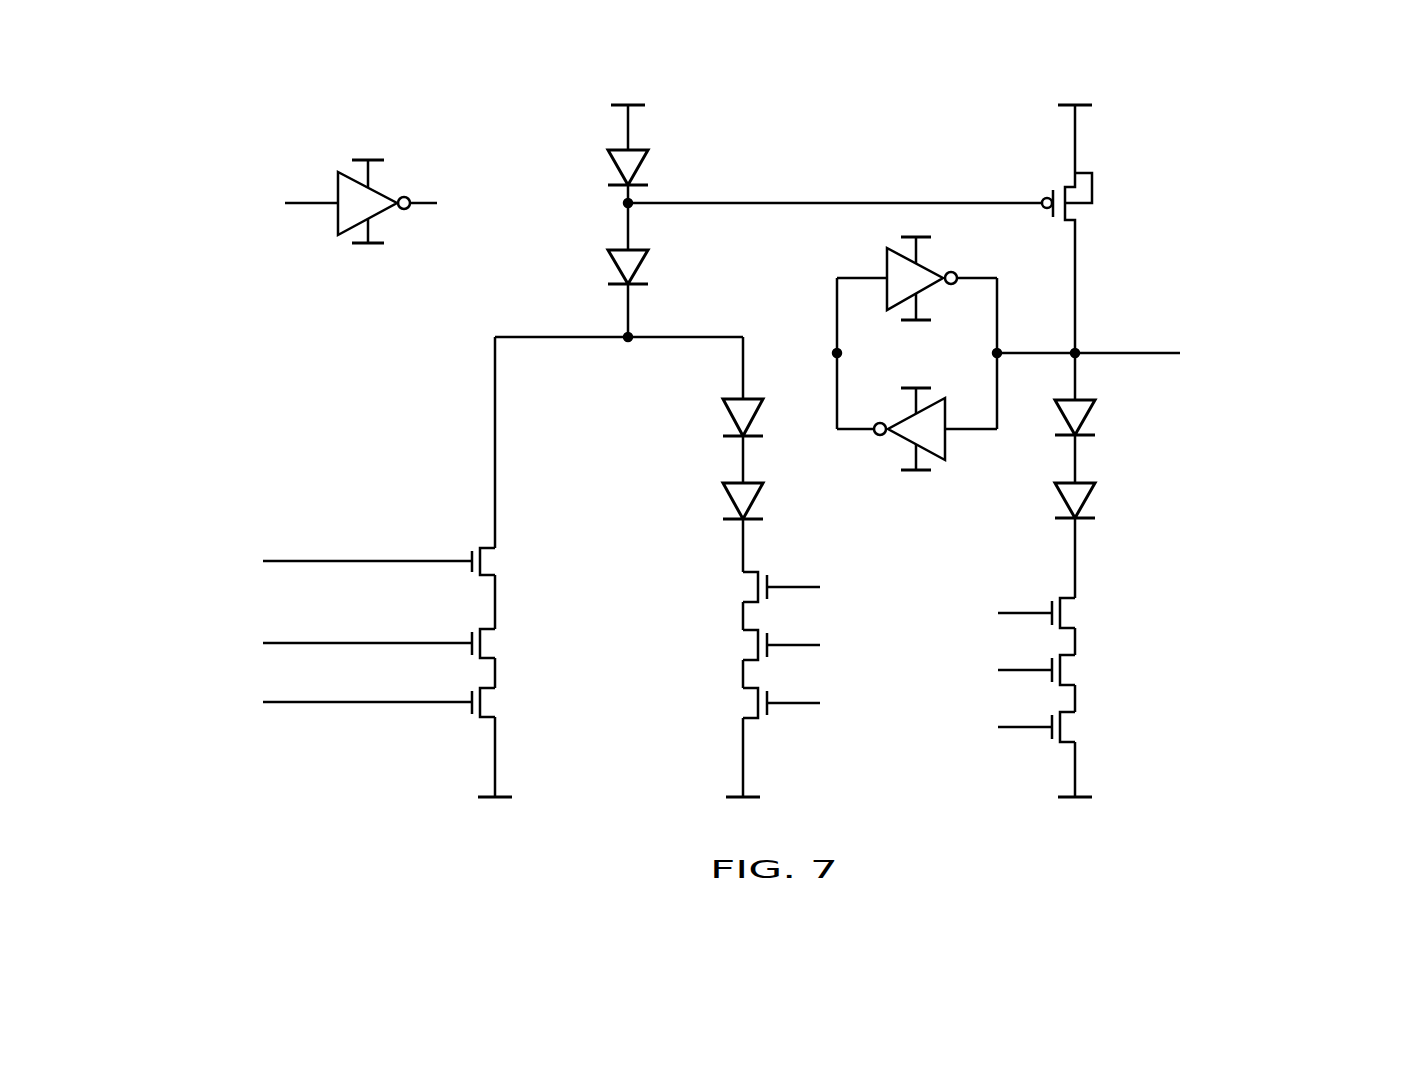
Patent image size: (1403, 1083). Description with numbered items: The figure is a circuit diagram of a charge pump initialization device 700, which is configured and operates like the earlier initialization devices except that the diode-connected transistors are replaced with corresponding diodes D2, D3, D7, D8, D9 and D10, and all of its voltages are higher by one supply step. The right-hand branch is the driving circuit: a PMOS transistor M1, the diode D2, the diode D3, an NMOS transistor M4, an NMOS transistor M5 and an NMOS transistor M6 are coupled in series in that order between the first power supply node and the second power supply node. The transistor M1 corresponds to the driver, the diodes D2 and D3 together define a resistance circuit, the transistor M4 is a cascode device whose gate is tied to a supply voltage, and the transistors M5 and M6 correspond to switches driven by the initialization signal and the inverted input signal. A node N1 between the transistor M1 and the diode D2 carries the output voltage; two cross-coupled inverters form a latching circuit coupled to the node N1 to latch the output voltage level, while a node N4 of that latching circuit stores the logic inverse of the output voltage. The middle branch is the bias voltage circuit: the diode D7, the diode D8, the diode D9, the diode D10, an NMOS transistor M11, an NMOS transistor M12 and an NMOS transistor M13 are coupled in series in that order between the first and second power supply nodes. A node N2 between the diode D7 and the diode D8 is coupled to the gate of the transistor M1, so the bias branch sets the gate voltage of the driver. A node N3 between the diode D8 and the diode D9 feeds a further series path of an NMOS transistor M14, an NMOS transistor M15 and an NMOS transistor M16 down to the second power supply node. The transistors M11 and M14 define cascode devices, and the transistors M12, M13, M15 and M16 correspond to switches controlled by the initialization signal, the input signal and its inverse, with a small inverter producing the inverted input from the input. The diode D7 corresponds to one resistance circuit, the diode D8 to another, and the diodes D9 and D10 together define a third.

The charge pump initialization device 700 is at (1249, 115).
The diode D7 is at (648, 179).
The diode D8 is at (648, 278).
The diode D9 is at (725, 428).
The diode D10 is at (725, 511).
The diode D2 is at (1095, 429).
The diode D3 is at (1095, 511).
The PMOS transistor M1 is at (1078, 208).
The NMOS transistor M4 is at (1077, 616).
The NMOS transistor M5 is at (1077, 673).
The NMOS transistor M6 is at (1077, 730).
The NMOS transistor M11 is at (741, 590).
The NMOS transistor M12 is at (741, 648).
The NMOS transistor M13 is at (741, 706).
The NMOS transistor M14 is at (497, 566).
The NMOS transistor M15 is at (497, 648).
The NMOS transistor M16 is at (497, 707).
The node N1 is at (999, 350).
The node N2 is at (630, 207).
The node N3 is at (629, 341).
The node N4 is at (833, 353).